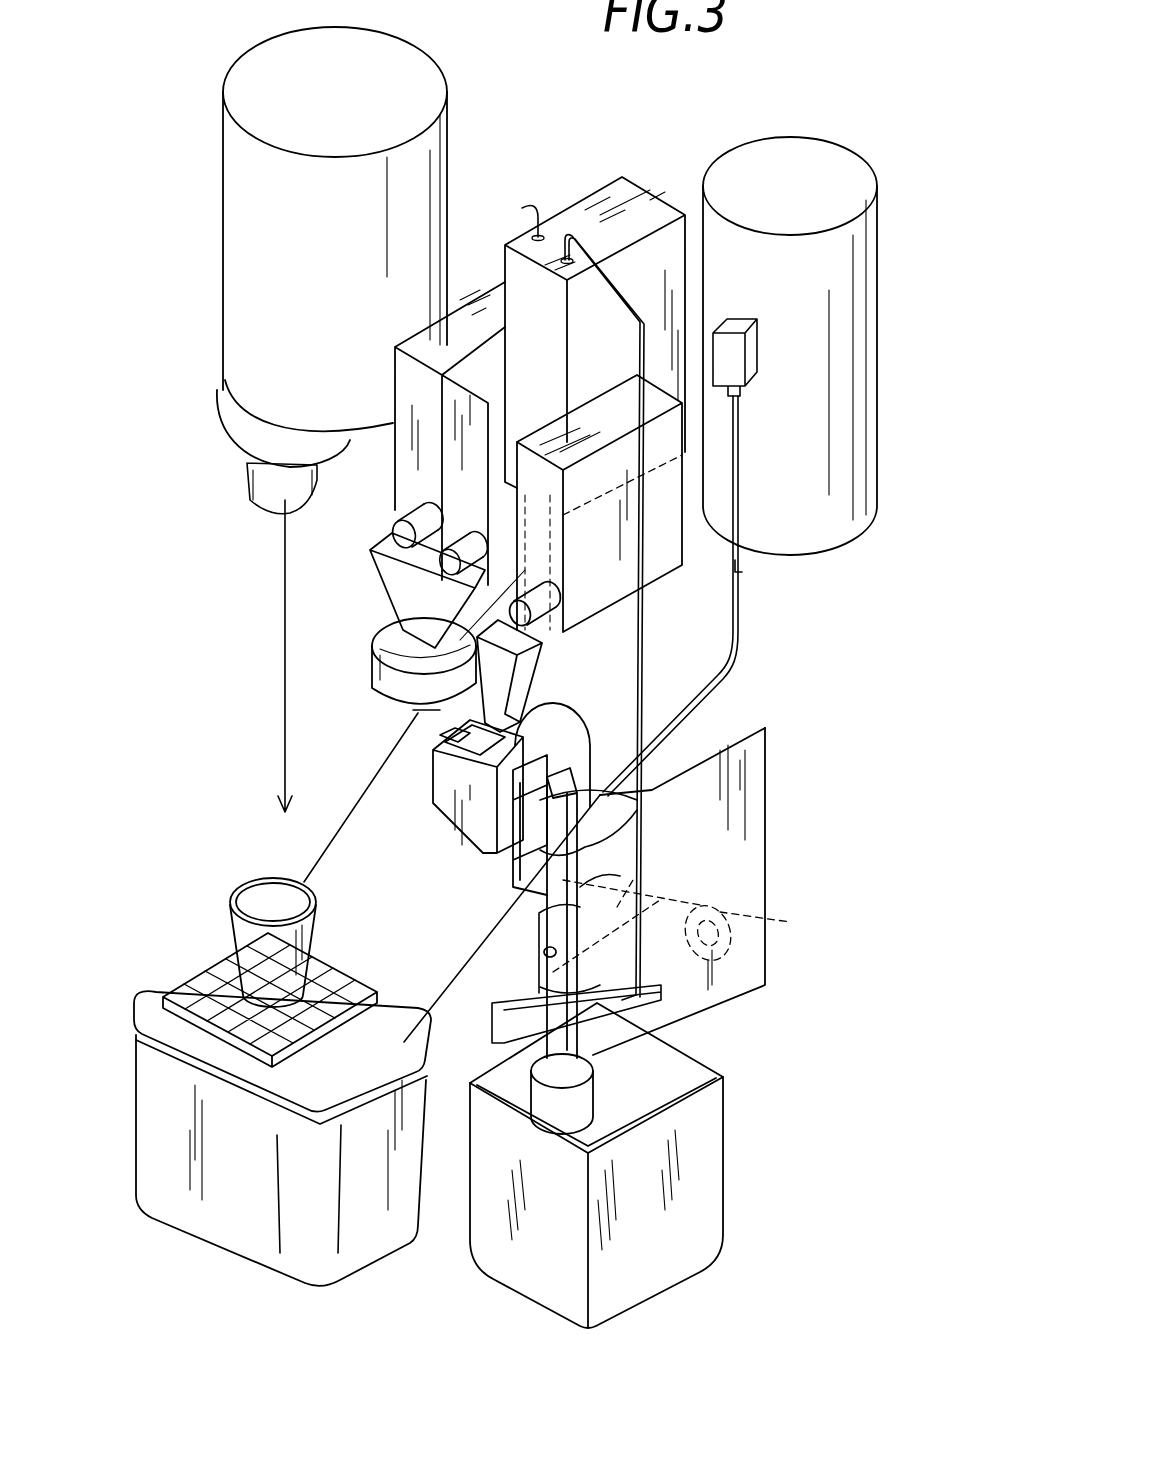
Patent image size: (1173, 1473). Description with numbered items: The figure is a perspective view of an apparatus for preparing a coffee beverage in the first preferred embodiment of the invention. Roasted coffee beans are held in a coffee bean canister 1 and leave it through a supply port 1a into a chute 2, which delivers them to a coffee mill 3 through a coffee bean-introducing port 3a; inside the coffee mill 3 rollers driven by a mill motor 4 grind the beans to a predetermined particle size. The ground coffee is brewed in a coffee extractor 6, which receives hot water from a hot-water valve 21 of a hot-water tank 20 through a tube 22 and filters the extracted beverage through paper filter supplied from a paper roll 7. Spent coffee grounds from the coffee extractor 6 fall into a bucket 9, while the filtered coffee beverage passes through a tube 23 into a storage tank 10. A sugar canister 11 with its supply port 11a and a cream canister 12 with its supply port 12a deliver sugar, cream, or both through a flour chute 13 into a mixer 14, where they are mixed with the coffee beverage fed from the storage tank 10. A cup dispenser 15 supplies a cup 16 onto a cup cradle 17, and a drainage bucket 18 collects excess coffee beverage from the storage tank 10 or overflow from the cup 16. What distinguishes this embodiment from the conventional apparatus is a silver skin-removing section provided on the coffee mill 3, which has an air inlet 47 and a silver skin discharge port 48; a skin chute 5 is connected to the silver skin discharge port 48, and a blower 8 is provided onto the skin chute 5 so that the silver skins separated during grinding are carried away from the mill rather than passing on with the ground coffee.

The coffee bean canister 1 is at (650, 402).
The supply port 1a is at (736, 568).
The chute 2 is at (530, 660).
The coffee mill 3 is at (447, 808).
The coffee bean-introducing port 3a is at (513, 748).
The mill motor 4 is at (653, 720).
The skin chute 5 is at (580, 887).
The coffee extractor 6 is at (742, 958).
The paper roll 7 is at (735, 922).
The blower 8 is at (589, 1094).
The bucket 9 is at (705, 1154).
The storage tank 10 is at (650, 205).
The sugar canister 11 is at (420, 340).
The supply port 11a is at (247, 480).
The cream canister 12 is at (483, 367).
The supply port 12a is at (435, 520).
The flour chute 13 is at (385, 580).
The mixer 14 is at (370, 650).
The cup dispenser 15 is at (417, 173).
The cup 16 is at (318, 952).
The cup cradle 17 is at (222, 985).
The drainage bucket 18 is at (235, 1210).
The hot-water tank 20 is at (840, 256).
The hot-water valve 21 is at (750, 353).
The tube 22 is at (723, 683).
The tube 23 is at (583, 245).
The air inlet 47 is at (440, 742).
The silver skin discharge port 48 is at (652, 790).